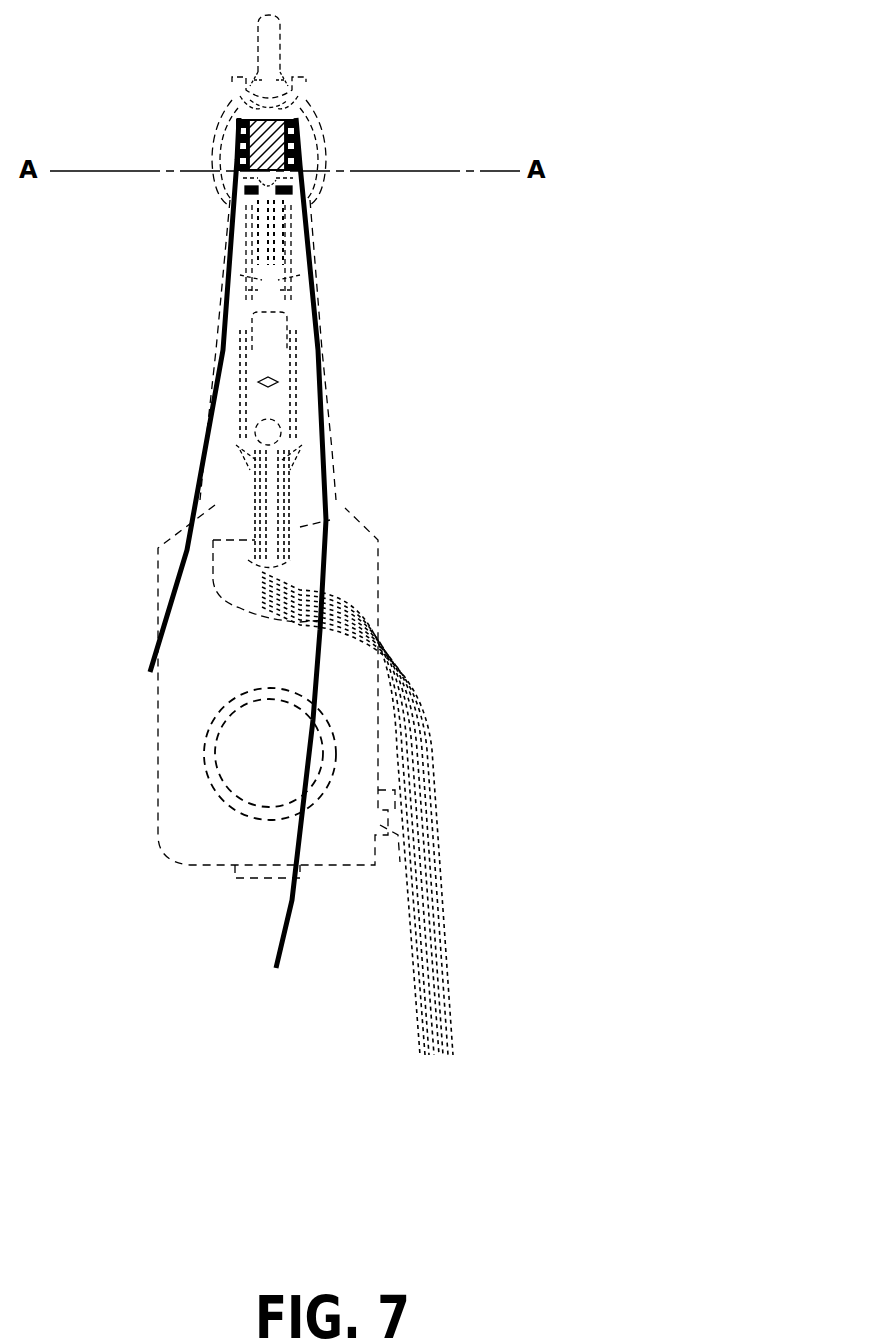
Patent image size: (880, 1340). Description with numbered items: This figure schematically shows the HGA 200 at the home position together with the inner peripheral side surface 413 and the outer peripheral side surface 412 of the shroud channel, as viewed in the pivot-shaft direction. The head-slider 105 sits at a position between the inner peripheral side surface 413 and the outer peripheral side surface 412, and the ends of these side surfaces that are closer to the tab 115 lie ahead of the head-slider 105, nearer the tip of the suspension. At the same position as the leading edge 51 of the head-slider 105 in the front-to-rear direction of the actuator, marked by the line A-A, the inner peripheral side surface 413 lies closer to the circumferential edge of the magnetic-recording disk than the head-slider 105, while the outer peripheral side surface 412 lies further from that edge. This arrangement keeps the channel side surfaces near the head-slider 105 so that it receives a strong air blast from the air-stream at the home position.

The tab 115 is at (279, 33).
The head-slider 105 is at (295, 138).
The leading edge 51 is at (308, 213).
The inner peripheral side surface 413 is at (205, 484).
The outer peripheral side surface 412 is at (325, 513).
The HGA 200 is at (158, 768).